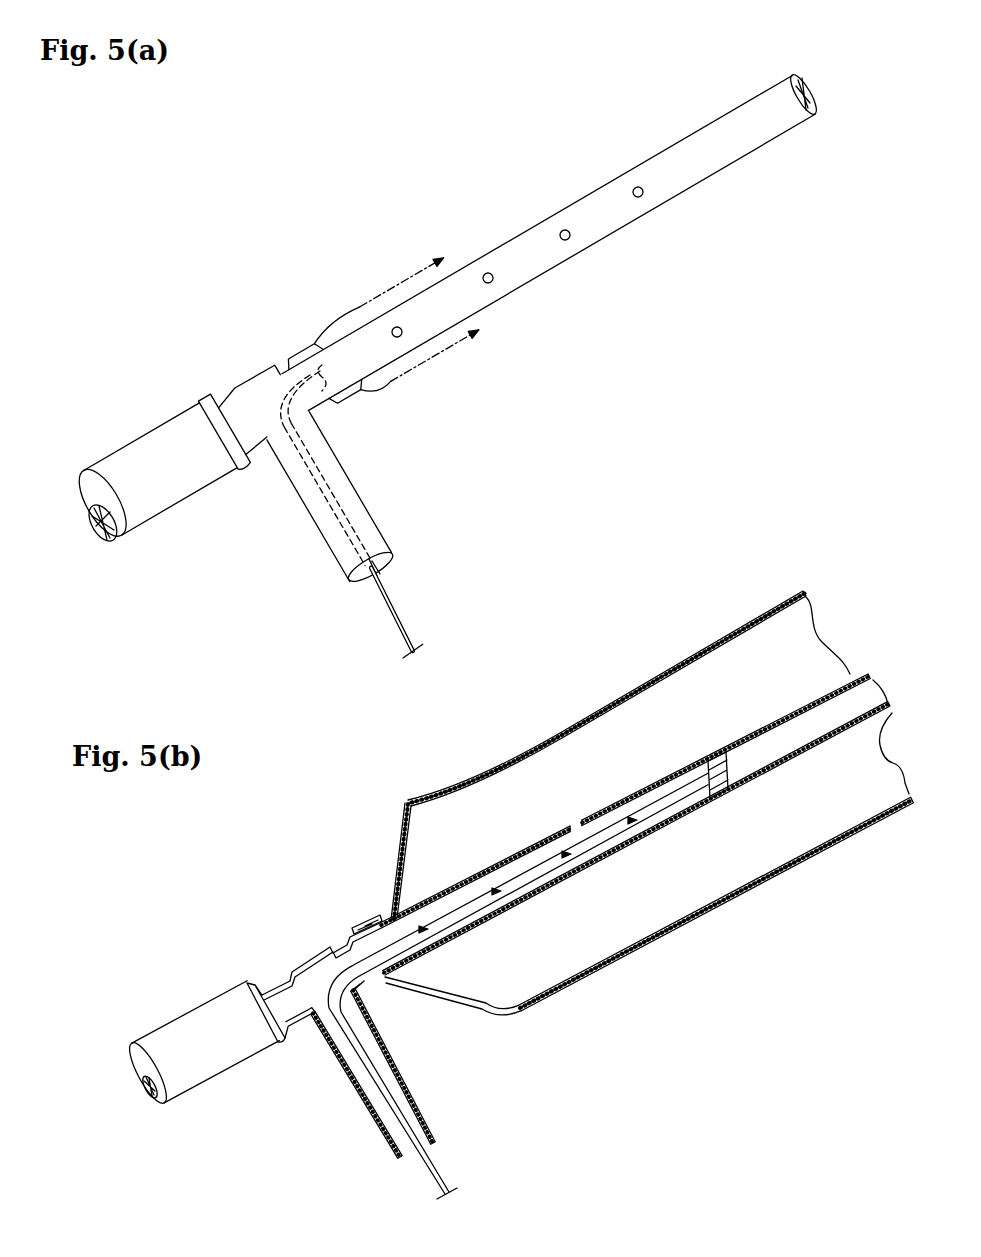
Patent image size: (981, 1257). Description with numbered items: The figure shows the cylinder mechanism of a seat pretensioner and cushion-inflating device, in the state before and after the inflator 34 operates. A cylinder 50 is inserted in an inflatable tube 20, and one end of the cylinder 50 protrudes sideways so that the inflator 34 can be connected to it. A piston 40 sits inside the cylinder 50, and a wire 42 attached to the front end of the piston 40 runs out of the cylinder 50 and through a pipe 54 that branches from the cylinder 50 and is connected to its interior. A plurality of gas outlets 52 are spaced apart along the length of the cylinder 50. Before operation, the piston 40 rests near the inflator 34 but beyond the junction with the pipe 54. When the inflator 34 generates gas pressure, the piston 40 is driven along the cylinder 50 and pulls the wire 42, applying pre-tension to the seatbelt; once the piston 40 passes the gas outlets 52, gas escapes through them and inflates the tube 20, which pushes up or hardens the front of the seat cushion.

In FIG. 5A, the inflatable tube 20 is at (407, 268).
In FIG. 5B, the inflatable tube 20 is at (640, 678).
In FIG. 5A, the inflator 34 is at (170, 497).
In FIG. 5B, the inflator 34 is at (227, 1045).
In FIG. 5A, the piston 40 is at (353, 393).
In FIG. 5B, the piston 40 is at (732, 785).
In FIG. 5A, the wire 42 is at (318, 497).
In FIG. 5B, the wire 42 is at (437, 1175).
In FIG. 5A, the cylinder 50 is at (677, 142).
In FIG. 5B, the cylinder 50 is at (747, 732).
In FIG. 5A, the gas outlets 52 is at (402, 333).
In FIG. 5B, the gas outlets 52 is at (575, 822).
In FIG. 5B, the pipe 54 is at (370, 1113).